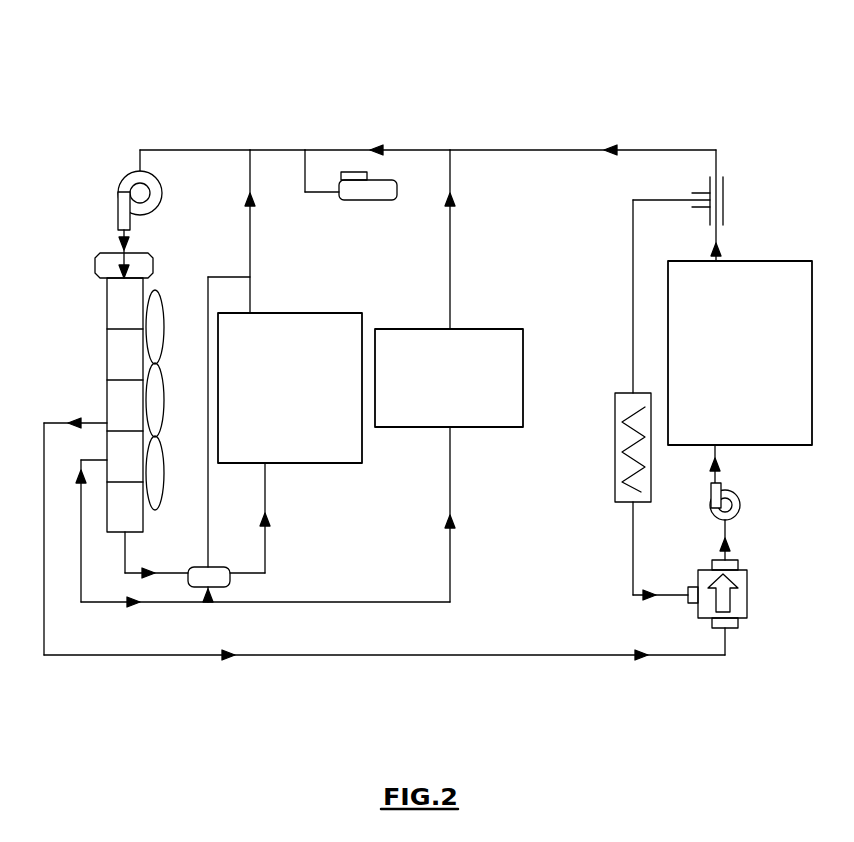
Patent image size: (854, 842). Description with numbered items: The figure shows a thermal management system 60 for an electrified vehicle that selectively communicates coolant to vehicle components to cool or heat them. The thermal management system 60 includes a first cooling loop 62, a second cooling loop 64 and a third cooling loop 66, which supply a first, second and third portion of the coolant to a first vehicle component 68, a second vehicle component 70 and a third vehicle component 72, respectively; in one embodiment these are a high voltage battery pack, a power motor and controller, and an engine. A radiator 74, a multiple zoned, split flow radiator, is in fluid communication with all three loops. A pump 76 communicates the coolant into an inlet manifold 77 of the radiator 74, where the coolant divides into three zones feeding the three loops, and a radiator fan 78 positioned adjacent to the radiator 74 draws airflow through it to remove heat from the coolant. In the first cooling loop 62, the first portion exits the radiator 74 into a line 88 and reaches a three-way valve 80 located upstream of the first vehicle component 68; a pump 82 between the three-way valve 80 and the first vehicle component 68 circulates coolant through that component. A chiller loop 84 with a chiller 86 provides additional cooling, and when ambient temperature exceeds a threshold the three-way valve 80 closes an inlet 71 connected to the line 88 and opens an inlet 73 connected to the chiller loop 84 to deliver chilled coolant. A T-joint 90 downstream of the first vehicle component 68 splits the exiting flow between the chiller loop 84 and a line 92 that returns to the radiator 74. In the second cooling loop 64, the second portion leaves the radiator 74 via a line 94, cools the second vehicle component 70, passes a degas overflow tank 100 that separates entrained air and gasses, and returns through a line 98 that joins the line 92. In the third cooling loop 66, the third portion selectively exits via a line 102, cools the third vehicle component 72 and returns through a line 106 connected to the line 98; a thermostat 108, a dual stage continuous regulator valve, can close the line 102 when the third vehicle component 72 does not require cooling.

The thermal management system 60 is at (441, 84).
The first cooling loop 62 is at (716, 120).
The second cooling loop 64 is at (352, 120).
The third cooling loop 66 is at (170, 110).
The first vehicle component 68 is at (800, 260).
The second vehicle component 70 is at (488, 328).
The inlet 71 is at (740, 627).
The third vehicle component 72 is at (320, 312).
The inlet 73 is at (692, 603).
The radiator 74 is at (88, 335).
The pump 76 is at (162, 193).
The inlet manifold 77 is at (95, 266).
The radiator fan 78 is at (160, 328).
The three-way valve 80 is at (748, 590).
The pump 82 is at (741, 505).
The chiller loop 84 is at (590, 270).
The chiller 86 is at (600, 375).
The line 88 is at (370, 656).
The T-joint 90 is at (724, 193).
The line 92 is at (676, 149).
The line 94 is at (305, 603).
The line 98 is at (281, 149).
The degas overflow tank 100 is at (362, 200).
The line 102 is at (168, 572).
The line 106 is at (218, 149).
The thermostat 108 is at (208, 603).